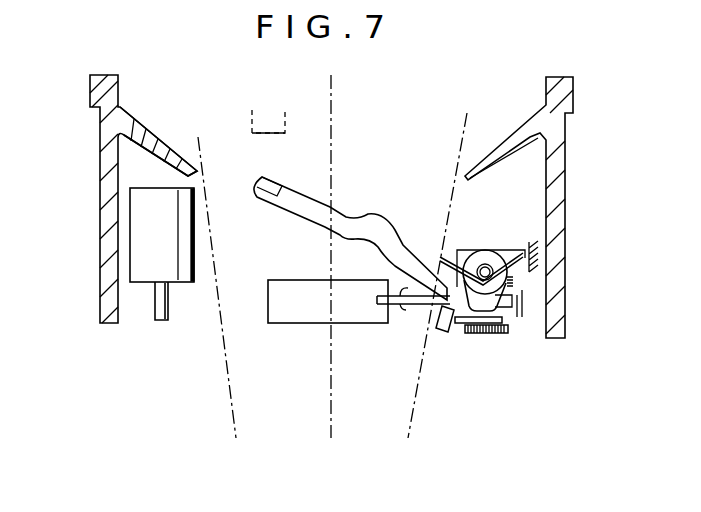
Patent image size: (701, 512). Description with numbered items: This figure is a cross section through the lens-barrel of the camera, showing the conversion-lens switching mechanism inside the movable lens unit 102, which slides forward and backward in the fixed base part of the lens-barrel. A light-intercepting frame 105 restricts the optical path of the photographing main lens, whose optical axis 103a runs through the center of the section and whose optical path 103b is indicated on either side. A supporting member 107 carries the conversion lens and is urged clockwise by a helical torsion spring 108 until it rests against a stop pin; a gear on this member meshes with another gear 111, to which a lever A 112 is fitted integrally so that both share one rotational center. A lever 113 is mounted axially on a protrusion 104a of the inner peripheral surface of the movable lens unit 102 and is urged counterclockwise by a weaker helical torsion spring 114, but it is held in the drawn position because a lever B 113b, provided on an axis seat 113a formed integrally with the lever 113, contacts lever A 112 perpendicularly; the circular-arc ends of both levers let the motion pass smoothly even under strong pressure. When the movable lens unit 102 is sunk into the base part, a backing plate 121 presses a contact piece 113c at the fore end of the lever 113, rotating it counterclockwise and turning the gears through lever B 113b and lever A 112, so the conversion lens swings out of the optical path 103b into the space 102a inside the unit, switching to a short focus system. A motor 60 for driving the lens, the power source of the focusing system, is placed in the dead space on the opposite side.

The motor 60 is at (138, 222).
The movable lens unit 102 is at (99, 297).
The space 102a is at (183, 297).
The optical axis 103a is at (333, 420).
The optical path 103b is at (236, 420).
The protrusion 104a is at (528, 292).
The light-intercepting frame 105 is at (187, 158).
The supporting member 107 is at (297, 316).
The helical torsion spring 108 is at (398, 308).
The gear 111 is at (485, 336).
The lever A 112 is at (507, 323).
The lever 113 is at (376, 215).
The axis seat 113a is at (478, 258).
The lever B 113b is at (443, 333).
The contact piece 113c is at (279, 181).
The helical torsion spring 114 is at (457, 263).
The backing plate 121 is at (268, 136).